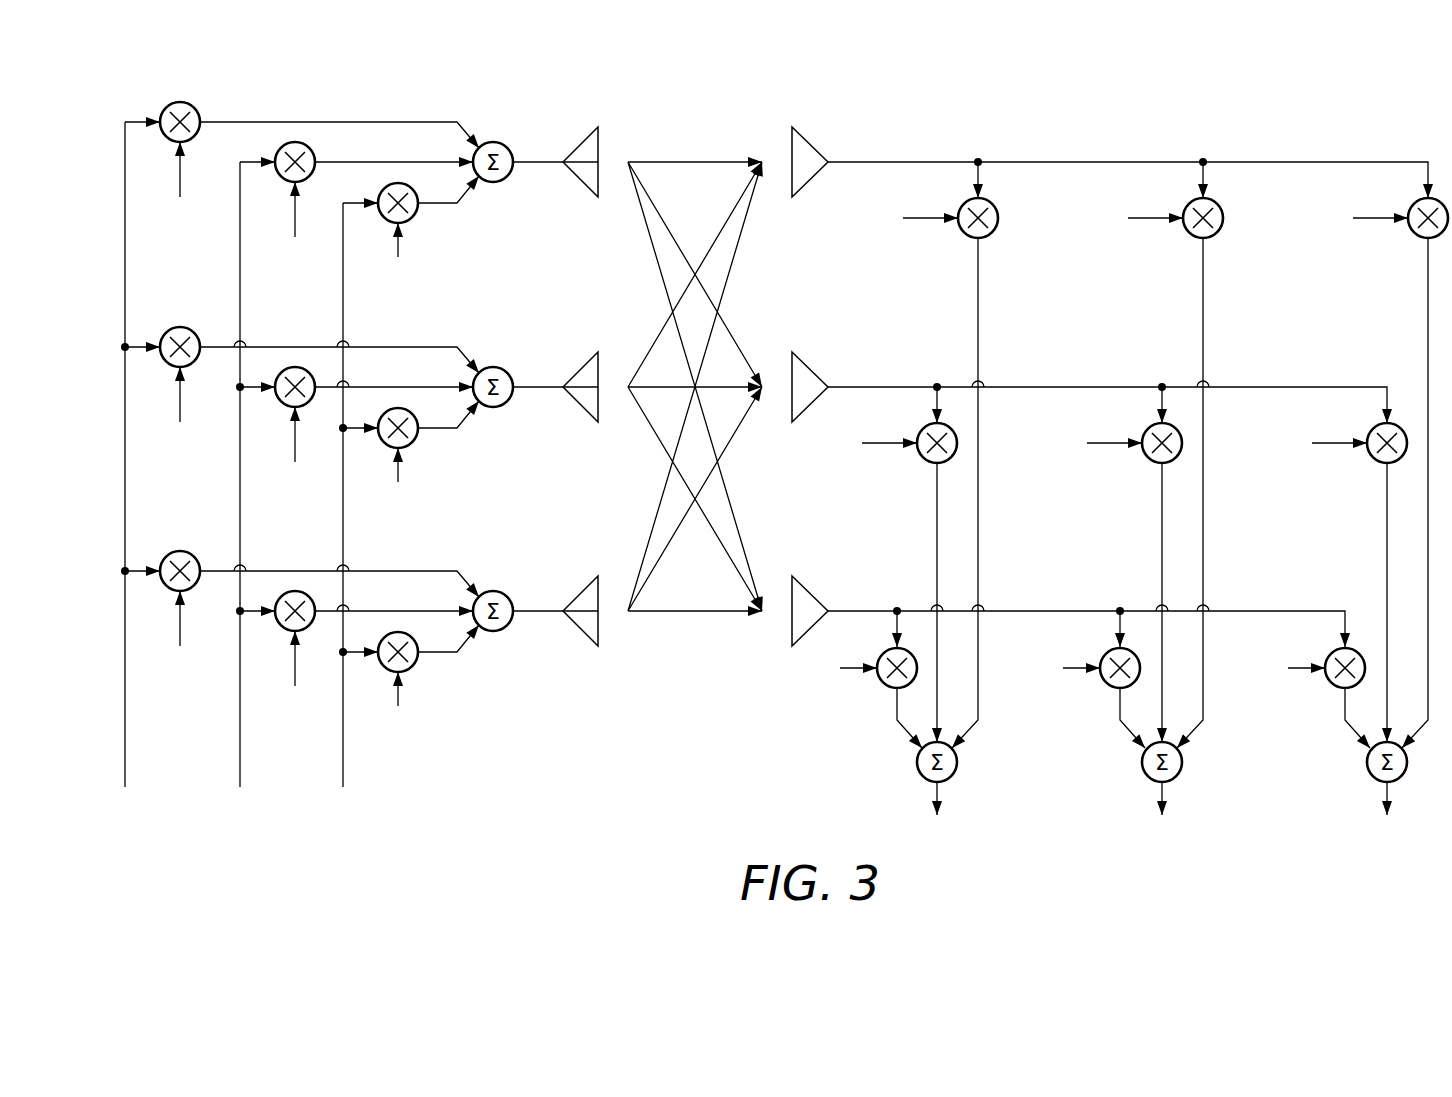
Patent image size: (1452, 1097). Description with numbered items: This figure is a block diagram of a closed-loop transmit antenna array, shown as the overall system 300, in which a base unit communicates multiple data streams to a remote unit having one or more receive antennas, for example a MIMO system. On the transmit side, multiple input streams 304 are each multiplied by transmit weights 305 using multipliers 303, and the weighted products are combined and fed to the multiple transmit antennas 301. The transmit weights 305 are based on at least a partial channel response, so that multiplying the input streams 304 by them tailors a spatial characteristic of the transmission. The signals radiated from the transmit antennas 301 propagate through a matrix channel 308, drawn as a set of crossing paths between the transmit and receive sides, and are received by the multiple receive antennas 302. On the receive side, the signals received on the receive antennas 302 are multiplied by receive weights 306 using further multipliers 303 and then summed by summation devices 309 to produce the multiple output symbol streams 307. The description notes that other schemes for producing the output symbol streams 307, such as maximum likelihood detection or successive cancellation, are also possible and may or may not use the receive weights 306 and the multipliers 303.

The MIMO transmit/receive processing system 300 is at (1402, 54).
The transmit antennas 301 is at (545, 122).
The receive antennas 302 is at (815, 122).
The multipliers 303 is at (187, 103).
The input streams 304 is at (160, 802).
The transmit weights 305 is at (172, 240).
The receive weights 306 is at (898, 234).
The output symbol streams 307 is at (960, 832).
The matrix channel 308 is at (666, 160).
The summation devices 309 is at (922, 780).